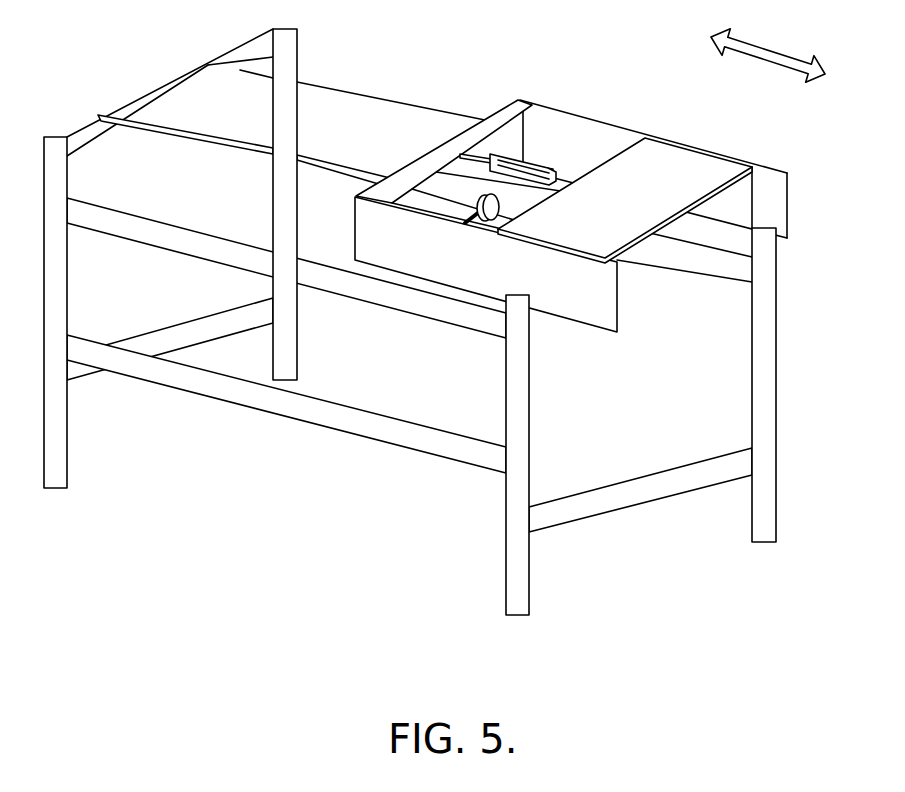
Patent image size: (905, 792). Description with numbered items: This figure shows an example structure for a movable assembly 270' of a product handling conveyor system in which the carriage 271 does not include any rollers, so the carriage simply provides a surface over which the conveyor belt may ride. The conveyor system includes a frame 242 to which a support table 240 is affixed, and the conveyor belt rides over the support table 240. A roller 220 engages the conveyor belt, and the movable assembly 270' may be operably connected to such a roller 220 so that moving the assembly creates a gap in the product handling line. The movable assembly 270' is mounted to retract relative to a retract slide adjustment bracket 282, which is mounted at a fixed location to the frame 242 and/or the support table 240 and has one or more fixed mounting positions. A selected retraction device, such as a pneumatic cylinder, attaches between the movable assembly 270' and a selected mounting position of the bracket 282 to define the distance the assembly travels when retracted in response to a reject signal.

The support table 240 is at (244, 148).
The frame 242 is at (286, 407).
The roller 220 is at (461, 230).
The retract slide adjustment bracket 282 is at (505, 127).
The carriage 271 is at (625, 183).
The movable assembly 270' is at (571, 177).